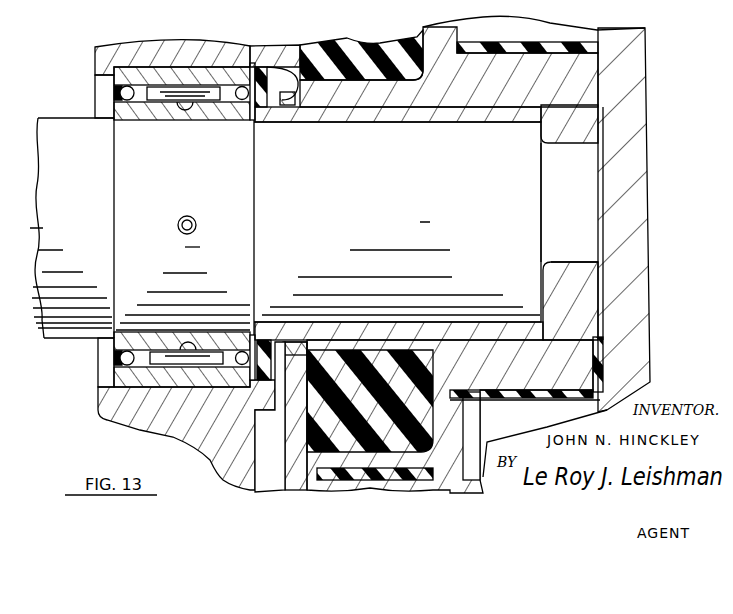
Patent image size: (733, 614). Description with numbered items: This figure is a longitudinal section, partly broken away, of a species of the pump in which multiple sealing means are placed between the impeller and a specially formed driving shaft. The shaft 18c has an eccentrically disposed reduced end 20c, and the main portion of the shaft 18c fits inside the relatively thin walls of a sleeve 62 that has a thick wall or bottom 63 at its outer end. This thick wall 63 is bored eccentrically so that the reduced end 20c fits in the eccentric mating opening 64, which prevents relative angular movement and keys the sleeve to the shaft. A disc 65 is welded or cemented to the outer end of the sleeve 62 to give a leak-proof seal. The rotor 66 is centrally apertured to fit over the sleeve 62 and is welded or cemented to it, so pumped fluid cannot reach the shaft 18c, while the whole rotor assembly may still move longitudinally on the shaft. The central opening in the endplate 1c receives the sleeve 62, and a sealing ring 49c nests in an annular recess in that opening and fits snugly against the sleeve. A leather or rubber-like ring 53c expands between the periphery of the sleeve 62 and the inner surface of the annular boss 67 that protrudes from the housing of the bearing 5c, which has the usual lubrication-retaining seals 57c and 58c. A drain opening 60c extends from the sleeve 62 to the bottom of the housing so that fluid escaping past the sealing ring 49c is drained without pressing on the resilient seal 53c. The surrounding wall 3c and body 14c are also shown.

The endplate 1c is at (283, 78).
The housing wall 3c is at (627, 100).
The bearing 5c is at (137, 65).
The seal body 14c is at (438, 45).
The shaft 18c is at (285, 228).
The eccentrically disposed reduced end 20c is at (566, 202).
The sealing ring 49c is at (283, 90).
The leather or rubber-like ring 53c is at (222, 63).
The lubrication-retaining seal 57c is at (251, 337).
The lubrication-retaining seal 58c is at (118, 361).
The drain opening 60c is at (267, 455).
The sleeve 62 is at (423, 122).
The thick wall or bottom 63 is at (543, 280).
The eccentric mating opening 64 is at (570, 262).
The disc 65 is at (617, 198).
The rotor 66 is at (500, 398).
The annular boss 67 is at (262, 48).